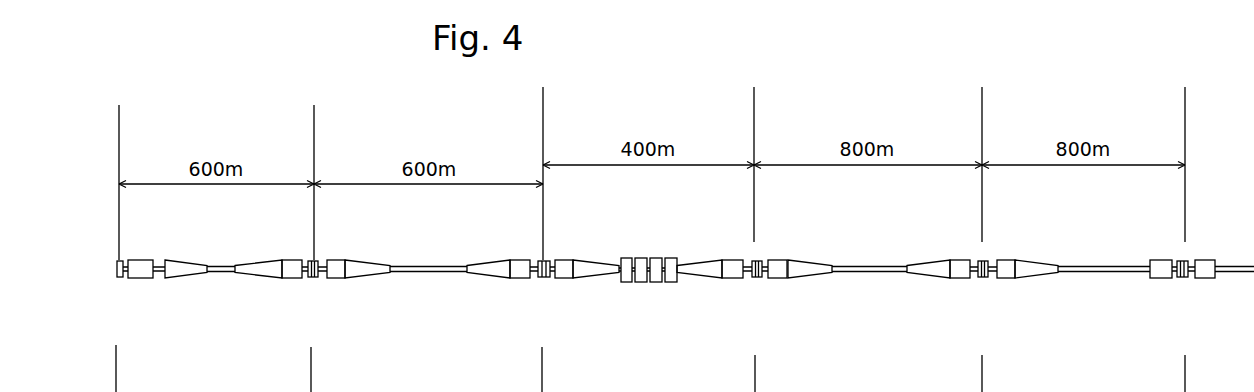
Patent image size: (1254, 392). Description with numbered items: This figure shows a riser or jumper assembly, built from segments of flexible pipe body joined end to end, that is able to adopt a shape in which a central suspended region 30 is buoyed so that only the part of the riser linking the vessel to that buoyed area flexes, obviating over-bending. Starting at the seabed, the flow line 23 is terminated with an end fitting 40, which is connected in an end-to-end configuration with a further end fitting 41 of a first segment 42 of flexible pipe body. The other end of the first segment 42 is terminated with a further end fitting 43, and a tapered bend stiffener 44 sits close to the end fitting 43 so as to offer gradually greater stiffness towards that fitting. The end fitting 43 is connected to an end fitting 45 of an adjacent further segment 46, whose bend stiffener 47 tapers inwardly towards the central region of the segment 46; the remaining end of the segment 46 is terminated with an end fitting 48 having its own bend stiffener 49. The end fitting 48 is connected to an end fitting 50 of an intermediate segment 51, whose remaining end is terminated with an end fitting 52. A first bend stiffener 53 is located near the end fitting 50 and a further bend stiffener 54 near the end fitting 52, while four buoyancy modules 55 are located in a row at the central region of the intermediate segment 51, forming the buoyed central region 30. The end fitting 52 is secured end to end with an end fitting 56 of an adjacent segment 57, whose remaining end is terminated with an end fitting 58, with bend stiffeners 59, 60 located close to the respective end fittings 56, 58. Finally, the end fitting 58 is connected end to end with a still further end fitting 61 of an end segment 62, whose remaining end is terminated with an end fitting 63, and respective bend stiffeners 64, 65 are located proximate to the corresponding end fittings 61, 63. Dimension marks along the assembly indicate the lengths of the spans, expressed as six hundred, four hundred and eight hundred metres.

The central suspended region 30 is at (643, 113).
The flow line 23 is at (1245, 273).
The end fitting 40 is at (1205, 261).
The end fitting 41 is at (1158, 279).
The first segment 42 is at (1105, 266).
The end fitting 43 is at (1008, 261).
The bend stiffener 44 is at (1040, 279).
The end fitting 45 is at (960, 279).
The adjacent further segment 46 is at (870, 273).
The bend stiffener 47 is at (927, 261).
The end fitting 48 is at (782, 279).
The bend stiffener 49 is at (810, 261).
The end fitting 50 is at (735, 260).
The intermediate segment 51 is at (677, 258).
The end fitting 52 is at (565, 279).
The first bend stiffener 53 is at (710, 279).
The bend stiffener 54 is at (597, 275).
The buoyancy modules 55 is at (620, 258).
The end fitting 56 is at (520, 279).
The adjacent segment 57 is at (427, 273).
The end fitting 58 is at (322, 279).
The bend stiffener 59 is at (487, 261).
The bend stiffener 60 is at (362, 261).
The end fitting 61 is at (293, 279).
The end segment 62 is at (230, 273).
The end fitting 63 is at (124, 279).
The bend stiffener 64 is at (262, 279).
The bend stiffener 65 is at (183, 279).